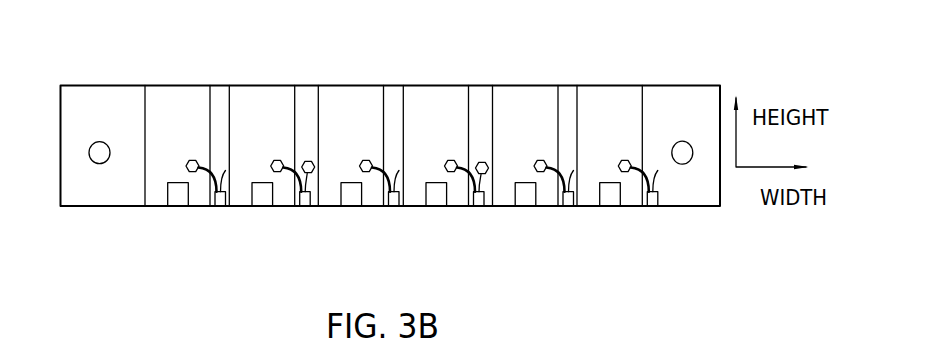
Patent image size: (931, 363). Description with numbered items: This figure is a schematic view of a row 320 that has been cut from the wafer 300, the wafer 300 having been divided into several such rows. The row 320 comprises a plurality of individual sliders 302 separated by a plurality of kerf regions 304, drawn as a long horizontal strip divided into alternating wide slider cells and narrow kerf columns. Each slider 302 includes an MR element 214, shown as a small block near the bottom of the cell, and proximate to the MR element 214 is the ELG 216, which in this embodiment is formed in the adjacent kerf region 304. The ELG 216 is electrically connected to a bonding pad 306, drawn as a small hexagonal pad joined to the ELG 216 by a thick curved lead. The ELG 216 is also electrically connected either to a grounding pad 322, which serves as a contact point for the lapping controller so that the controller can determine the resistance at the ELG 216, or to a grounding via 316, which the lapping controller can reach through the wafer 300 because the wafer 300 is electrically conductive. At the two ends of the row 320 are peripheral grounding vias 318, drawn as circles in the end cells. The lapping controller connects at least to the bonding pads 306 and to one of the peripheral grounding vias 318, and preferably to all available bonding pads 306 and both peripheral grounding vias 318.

The wafer 300 is at (378, 63).
The slider 302 is at (184, 86).
The kerf region 304 is at (481, 86).
The bonding pad 306 is at (192, 158).
The grounding via 316 is at (224, 162).
The peripheral grounding via 318 is at (100, 142).
The row 320 is at (90, 86).
The grounding pad 322 is at (309, 160).
The MR element 214 is at (178, 206).
The ELG 216 is at (308, 206).